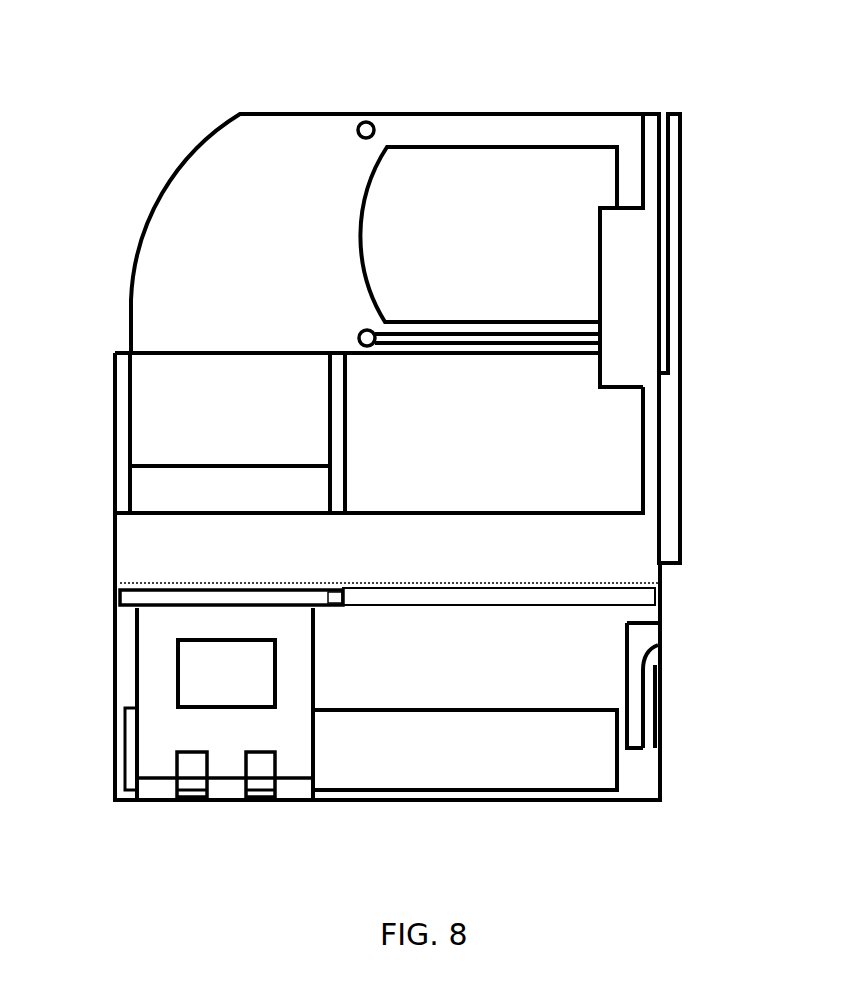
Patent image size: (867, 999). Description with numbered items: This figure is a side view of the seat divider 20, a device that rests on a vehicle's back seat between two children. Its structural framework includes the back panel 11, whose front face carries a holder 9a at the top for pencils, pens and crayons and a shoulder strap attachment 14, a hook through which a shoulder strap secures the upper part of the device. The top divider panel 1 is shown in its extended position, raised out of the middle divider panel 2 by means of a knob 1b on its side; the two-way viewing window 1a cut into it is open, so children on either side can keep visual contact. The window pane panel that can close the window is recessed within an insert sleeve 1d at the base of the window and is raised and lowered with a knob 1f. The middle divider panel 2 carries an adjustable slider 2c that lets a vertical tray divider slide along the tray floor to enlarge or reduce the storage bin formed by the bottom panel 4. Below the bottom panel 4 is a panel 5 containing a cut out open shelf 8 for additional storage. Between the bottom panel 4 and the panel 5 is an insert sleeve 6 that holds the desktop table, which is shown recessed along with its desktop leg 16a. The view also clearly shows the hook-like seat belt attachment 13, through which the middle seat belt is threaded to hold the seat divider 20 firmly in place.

The seat divider 20 is at (197, 107).
The top divider panel 1 is at (148, 197).
The two-way viewing window 1a is at (388, 254).
The knob 1b is at (342, 137).
The knob 1f is at (342, 343).
The insert sleeve 1d is at (490, 359).
The holder 9a is at (627, 305).
The shoulder strap attachment 14 is at (700, 234).
The back panel 11 is at (700, 484).
The middle divider panel 2 is at (385, 412).
The adjustable slider 2c is at (163, 445).
The bottom panel 4 is at (629, 577).
The insert sleeve 6 is at (103, 602).
The panel 5 is at (579, 672).
The seat belt attachment 13 is at (677, 709).
The cut out open shelf 8 is at (579, 769).
The desktop leg 16a is at (229, 820).